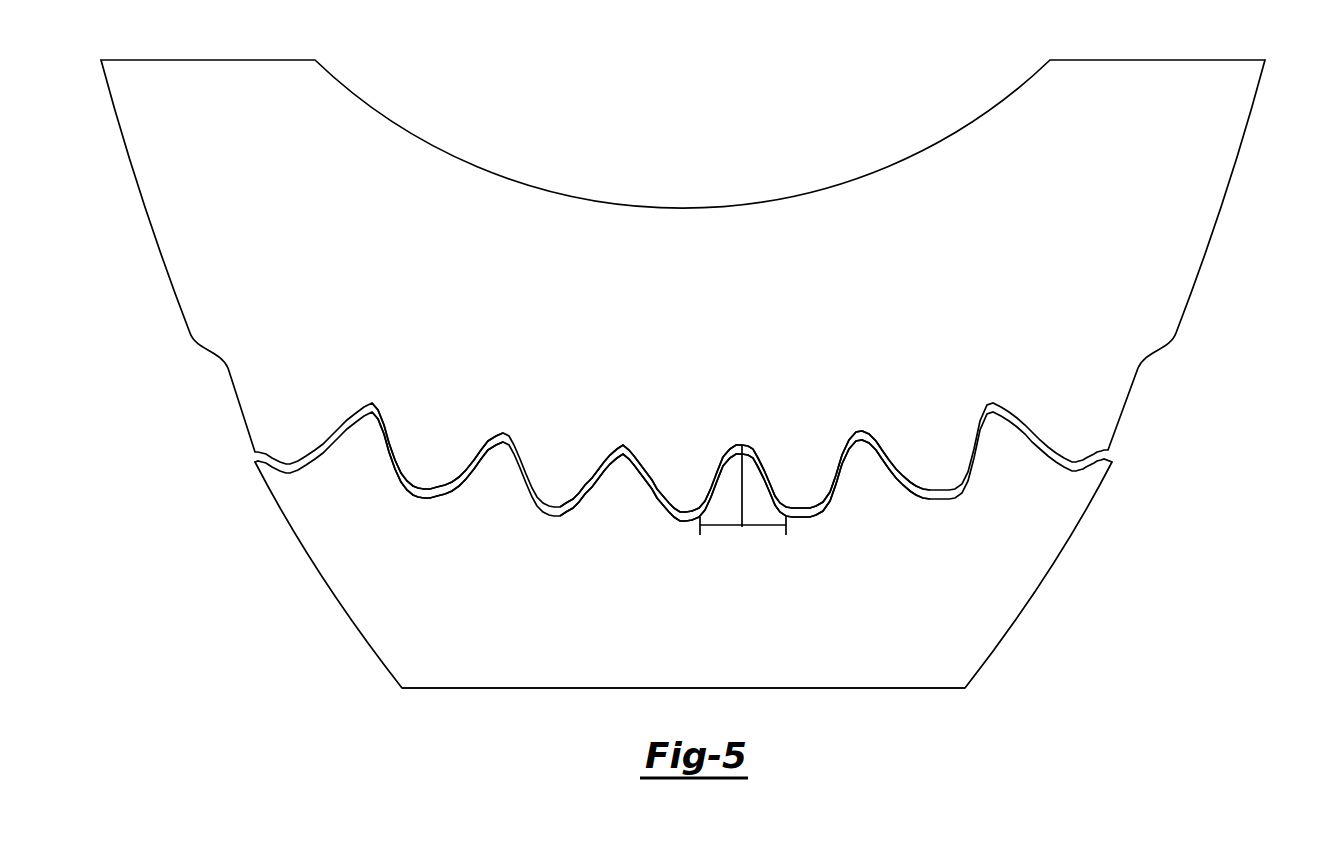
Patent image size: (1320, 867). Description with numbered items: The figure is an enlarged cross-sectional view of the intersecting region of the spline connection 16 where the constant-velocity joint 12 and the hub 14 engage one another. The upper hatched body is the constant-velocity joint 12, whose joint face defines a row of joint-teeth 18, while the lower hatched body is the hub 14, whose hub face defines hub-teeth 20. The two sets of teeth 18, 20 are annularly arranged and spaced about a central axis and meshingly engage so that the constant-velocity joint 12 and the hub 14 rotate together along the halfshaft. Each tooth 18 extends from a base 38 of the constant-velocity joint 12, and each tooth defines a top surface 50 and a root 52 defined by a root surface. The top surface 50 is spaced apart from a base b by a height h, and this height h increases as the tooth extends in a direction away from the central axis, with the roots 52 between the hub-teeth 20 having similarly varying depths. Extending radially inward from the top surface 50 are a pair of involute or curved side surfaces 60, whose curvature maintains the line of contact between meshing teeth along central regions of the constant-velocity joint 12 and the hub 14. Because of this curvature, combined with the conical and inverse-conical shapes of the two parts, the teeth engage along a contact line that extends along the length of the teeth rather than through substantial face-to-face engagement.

The constant-velocity joint 12 is at (1055, 530).
The hub 14 is at (1197, 218).
The spline connection 16 is at (206, 508).
The teeth 18 is at (865, 476).
The teeth 20 is at (430, 473).
The base 38 is at (980, 652).
The top surface 50 is at (742, 445).
The root 52 is at (433, 496).
The side surfaces 60 is at (607, 464).
The height h is at (744, 488).
The base b is at (730, 527).